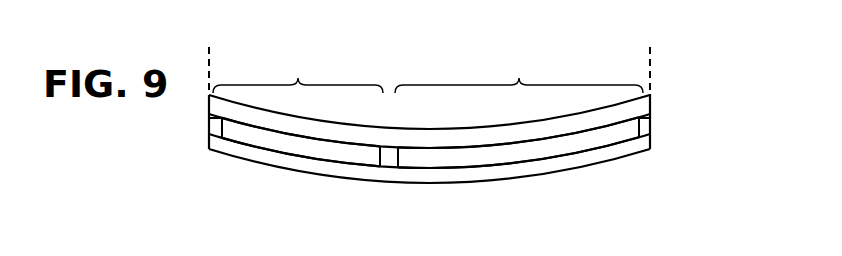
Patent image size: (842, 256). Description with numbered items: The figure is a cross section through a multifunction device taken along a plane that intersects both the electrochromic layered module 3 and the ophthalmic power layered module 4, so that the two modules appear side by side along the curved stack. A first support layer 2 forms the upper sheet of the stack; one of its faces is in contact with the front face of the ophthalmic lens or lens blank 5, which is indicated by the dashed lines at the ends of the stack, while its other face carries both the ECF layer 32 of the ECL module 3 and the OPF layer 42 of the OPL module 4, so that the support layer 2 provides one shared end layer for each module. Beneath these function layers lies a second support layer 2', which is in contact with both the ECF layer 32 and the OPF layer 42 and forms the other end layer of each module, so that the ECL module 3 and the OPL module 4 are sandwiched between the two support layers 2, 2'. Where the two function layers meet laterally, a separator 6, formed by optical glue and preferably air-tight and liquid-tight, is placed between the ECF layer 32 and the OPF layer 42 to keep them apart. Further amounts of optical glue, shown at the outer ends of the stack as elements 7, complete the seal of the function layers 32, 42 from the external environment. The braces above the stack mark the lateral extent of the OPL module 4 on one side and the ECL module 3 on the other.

The support layer 2 is at (462, 108).
The second support layer 2' is at (467, 158).
The electrochromic layered module 3 is at (519, 71).
The ophthalmic power layered module 4 is at (298, 71).
The ophthalmic substrate 5 is at (618, 73).
The separator 6 is at (389, 155).
The edge seal 7 is at (688, 117).
The ECF layer 32 is at (595, 138).
The OPF layer 42 is at (285, 145).